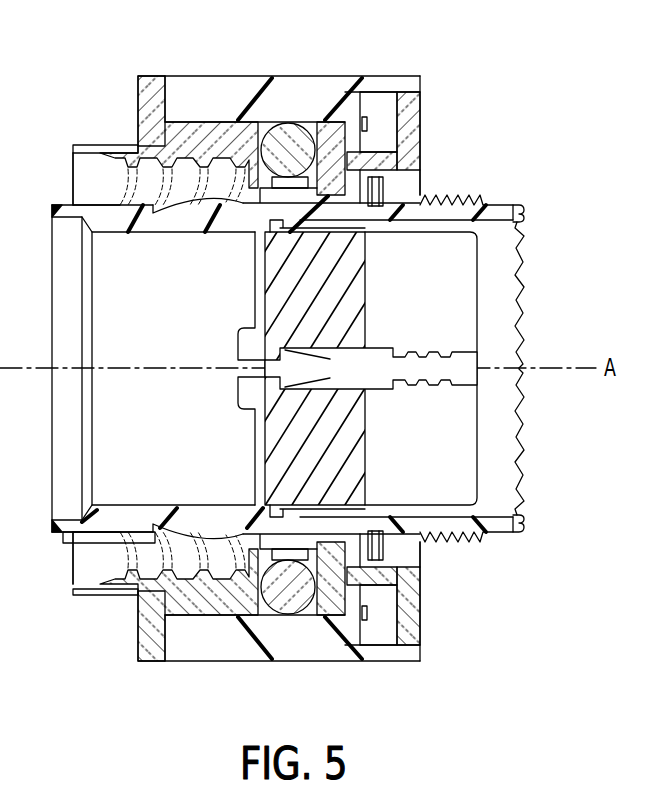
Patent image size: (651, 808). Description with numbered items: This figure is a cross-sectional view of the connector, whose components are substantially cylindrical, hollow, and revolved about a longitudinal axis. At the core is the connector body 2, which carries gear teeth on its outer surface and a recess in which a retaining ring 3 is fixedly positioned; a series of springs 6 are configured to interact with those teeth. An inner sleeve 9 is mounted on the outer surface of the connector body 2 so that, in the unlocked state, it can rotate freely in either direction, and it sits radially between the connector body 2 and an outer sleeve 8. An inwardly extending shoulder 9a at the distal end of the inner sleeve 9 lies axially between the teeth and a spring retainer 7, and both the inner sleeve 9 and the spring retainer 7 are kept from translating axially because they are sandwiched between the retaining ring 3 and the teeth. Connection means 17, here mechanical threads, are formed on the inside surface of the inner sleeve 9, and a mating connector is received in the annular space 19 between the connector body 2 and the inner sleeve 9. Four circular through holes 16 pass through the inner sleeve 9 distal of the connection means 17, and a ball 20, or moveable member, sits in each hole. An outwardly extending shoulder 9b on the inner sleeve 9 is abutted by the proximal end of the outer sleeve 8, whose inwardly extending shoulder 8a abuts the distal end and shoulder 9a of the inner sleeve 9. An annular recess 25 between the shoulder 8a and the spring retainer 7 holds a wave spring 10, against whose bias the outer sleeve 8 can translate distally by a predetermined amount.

The connector body 2 is at (110, 222).
The retaining ring 3 is at (374, 207).
The spring 6 is at (283, 190).
The spring retainer 7 is at (415, 141).
The outer sleeve 8 is at (203, 88).
The shoulder 8a is at (355, 606).
The inner sleeve 9 is at (93, 146).
The inwardly extending shoulder 9a is at (328, 605).
The outwardly extending shoulder 9b is at (150, 86).
The wave spring 10 is at (368, 613).
The through hole 16 is at (311, 121).
The connection means 17 is at (133, 164).
The annular space 19 is at (102, 188).
The ball 20 is at (275, 613).
The annular recess 25 is at (377, 117).